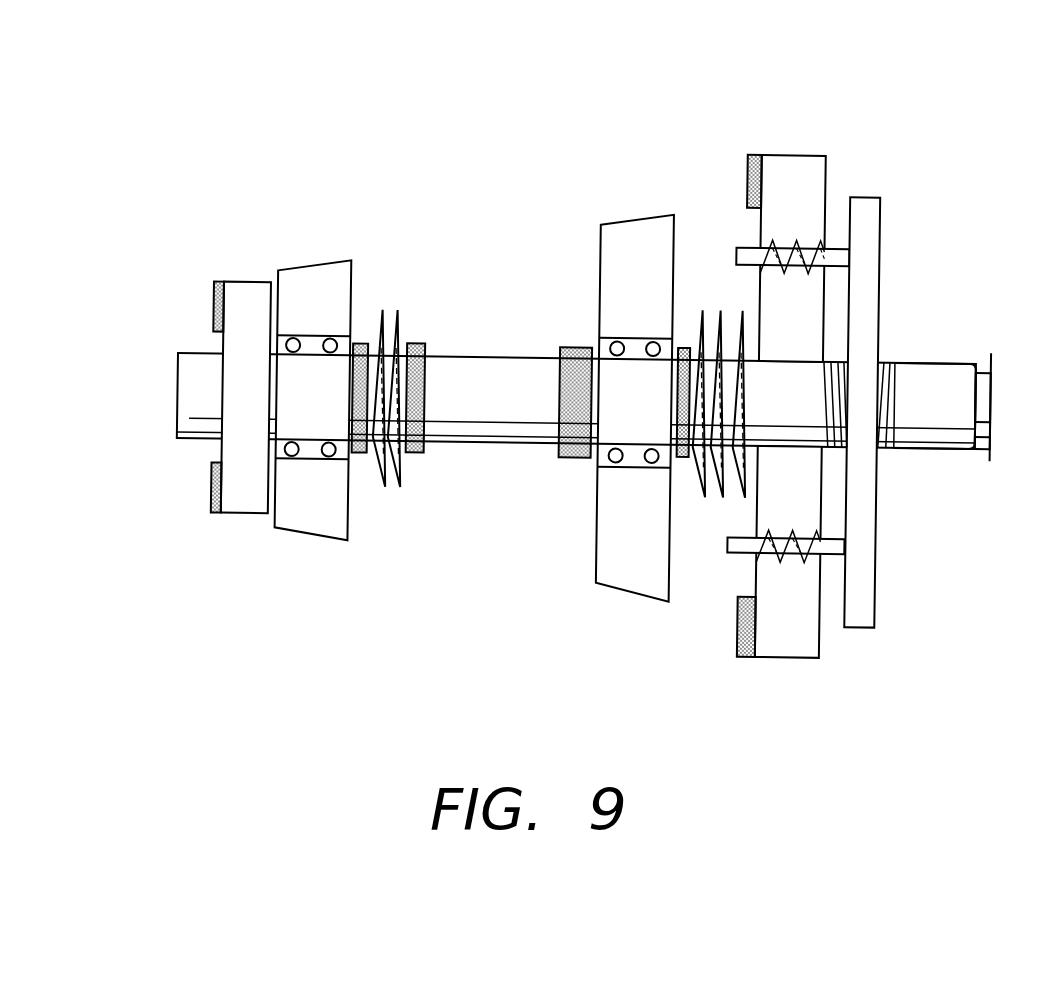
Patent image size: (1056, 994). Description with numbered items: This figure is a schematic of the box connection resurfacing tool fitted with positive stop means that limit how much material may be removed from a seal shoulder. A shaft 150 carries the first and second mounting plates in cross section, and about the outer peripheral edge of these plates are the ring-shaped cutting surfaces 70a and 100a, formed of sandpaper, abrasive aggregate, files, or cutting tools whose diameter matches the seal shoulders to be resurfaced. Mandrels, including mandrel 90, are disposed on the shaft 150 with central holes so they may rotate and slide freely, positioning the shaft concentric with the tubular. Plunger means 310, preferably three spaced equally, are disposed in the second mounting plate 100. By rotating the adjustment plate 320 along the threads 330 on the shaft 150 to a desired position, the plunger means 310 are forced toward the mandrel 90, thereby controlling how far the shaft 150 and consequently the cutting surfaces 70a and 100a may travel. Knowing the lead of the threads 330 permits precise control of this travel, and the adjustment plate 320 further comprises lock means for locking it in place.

The cutting surface 70a is at (212, 490).
The second mandrel 90 is at (611, 562).
The cutting surface 100a is at (742, 150).
The second mounting plate 100 is at (789, 632).
The shaft 150 is at (928, 358).
The plunger means 310 is at (750, 547).
The adjustment plate 320 is at (871, 590).
The threads 330 is at (901, 432).